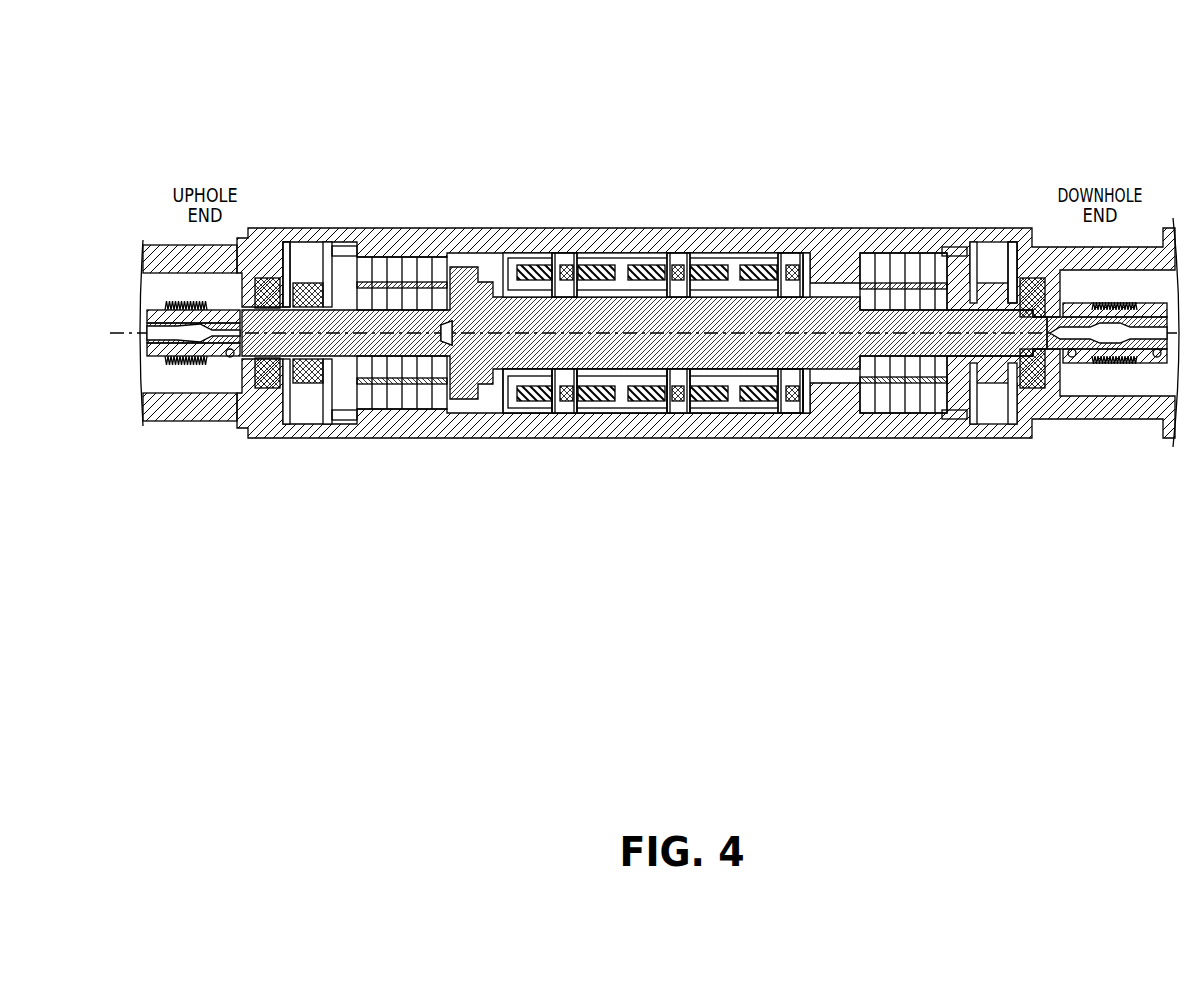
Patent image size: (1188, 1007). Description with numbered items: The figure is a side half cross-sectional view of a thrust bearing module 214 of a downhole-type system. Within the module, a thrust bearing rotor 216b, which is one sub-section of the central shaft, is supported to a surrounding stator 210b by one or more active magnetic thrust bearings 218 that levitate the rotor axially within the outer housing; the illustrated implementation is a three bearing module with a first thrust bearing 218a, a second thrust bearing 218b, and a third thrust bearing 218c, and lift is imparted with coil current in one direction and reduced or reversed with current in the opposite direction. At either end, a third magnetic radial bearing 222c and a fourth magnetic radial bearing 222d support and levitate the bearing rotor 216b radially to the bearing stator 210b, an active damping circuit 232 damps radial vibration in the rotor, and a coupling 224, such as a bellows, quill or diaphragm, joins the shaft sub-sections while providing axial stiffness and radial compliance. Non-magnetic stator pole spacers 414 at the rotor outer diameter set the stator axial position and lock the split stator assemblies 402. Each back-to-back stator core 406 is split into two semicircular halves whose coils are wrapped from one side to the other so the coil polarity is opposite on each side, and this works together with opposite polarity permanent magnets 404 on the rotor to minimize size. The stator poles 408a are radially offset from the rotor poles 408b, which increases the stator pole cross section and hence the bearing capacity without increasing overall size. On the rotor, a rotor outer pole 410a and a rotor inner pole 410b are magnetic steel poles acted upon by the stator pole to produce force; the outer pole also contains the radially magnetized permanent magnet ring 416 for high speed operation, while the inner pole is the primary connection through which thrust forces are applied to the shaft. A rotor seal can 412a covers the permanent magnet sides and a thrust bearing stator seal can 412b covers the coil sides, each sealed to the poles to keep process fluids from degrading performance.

The thrust bearing module 214 is at (551, 46).
The surrounding stator 210b is at (610, 250).
The thrust bearing rotor 216b is at (935, 337).
The active magnetic thrust bearing 218 is at (560, 700).
The first thrust bearing 218a is at (567, 402).
The second thrust bearing 218b is at (678, 402).
The third thrust bearing 218c is at (790, 403).
The third magnetic radial bearing 222c is at (390, 260).
The fourth magnetic radial bearing 222d is at (912, 262).
The coupling 224 is at (192, 367).
The active damping circuit 232 is at (322, 263).
The split stator assembly 402 is at (714, 248).
The opposite polarity permanent magnet 404 is at (790, 268).
The back-to-back stator core 406 is at (760, 272).
The stator pole 408a is at (535, 412).
The rotor pole 408b is at (552, 430).
The rotor outer pole 410a is at (565, 288).
The rotor inner pole 410b is at (568, 270).
The rotor seal can 412a is at (667, 392).
The thrust bearing stator seal can 412b is at (552, 273).
The stator pole spacer 414 is at (795, 410).
The radially magnetized permanent magnet ring 416 is at (680, 272).